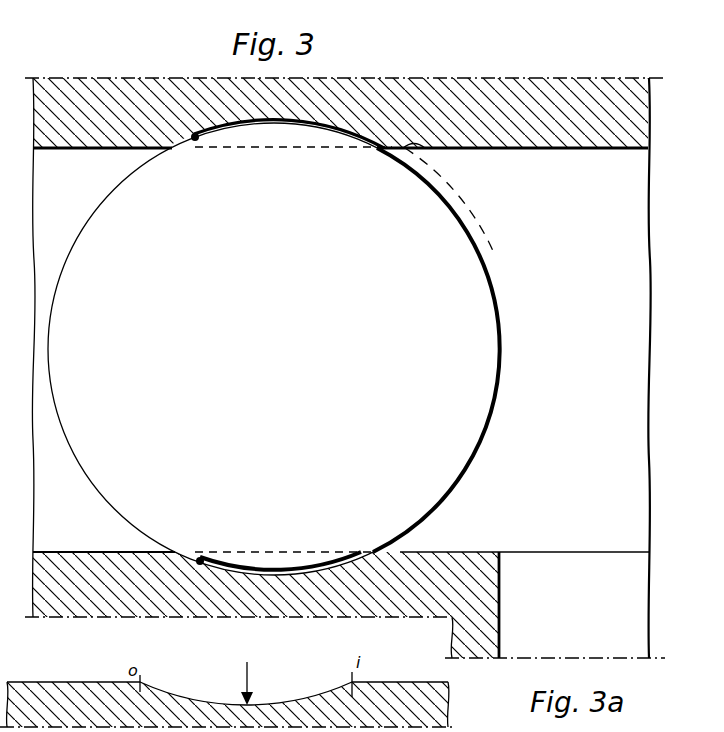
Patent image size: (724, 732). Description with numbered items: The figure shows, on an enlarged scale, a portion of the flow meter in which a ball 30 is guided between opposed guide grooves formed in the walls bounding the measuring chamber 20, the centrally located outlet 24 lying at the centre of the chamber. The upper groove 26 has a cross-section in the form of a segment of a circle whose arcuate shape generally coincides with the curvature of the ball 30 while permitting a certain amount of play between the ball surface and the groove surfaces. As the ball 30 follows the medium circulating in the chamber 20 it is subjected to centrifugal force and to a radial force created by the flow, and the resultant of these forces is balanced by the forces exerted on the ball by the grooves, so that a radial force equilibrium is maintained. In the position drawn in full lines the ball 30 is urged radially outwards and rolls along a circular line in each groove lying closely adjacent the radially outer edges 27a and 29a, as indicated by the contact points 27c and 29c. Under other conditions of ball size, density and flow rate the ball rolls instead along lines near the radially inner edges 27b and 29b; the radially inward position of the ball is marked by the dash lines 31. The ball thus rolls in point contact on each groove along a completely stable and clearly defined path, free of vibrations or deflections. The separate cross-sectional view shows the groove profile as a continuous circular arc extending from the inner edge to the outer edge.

The chamber 20 is at (592, 360).
The outlet 24 is at (590, 620).
The groove 26 is at (348, 126).
The radially outer edge of groove 27a is at (180, 148).
The radially inner edge of groove 27b is at (437, 150).
The contact point 27c is at (195, 138).
The radially outer edge of groove 29a is at (178, 552).
The radially inner edge of groove 29b is at (400, 552).
The contact point 29c is at (200, 560).
The ball 30 is at (288, 320).
The dash lines 31 is at (484, 224).